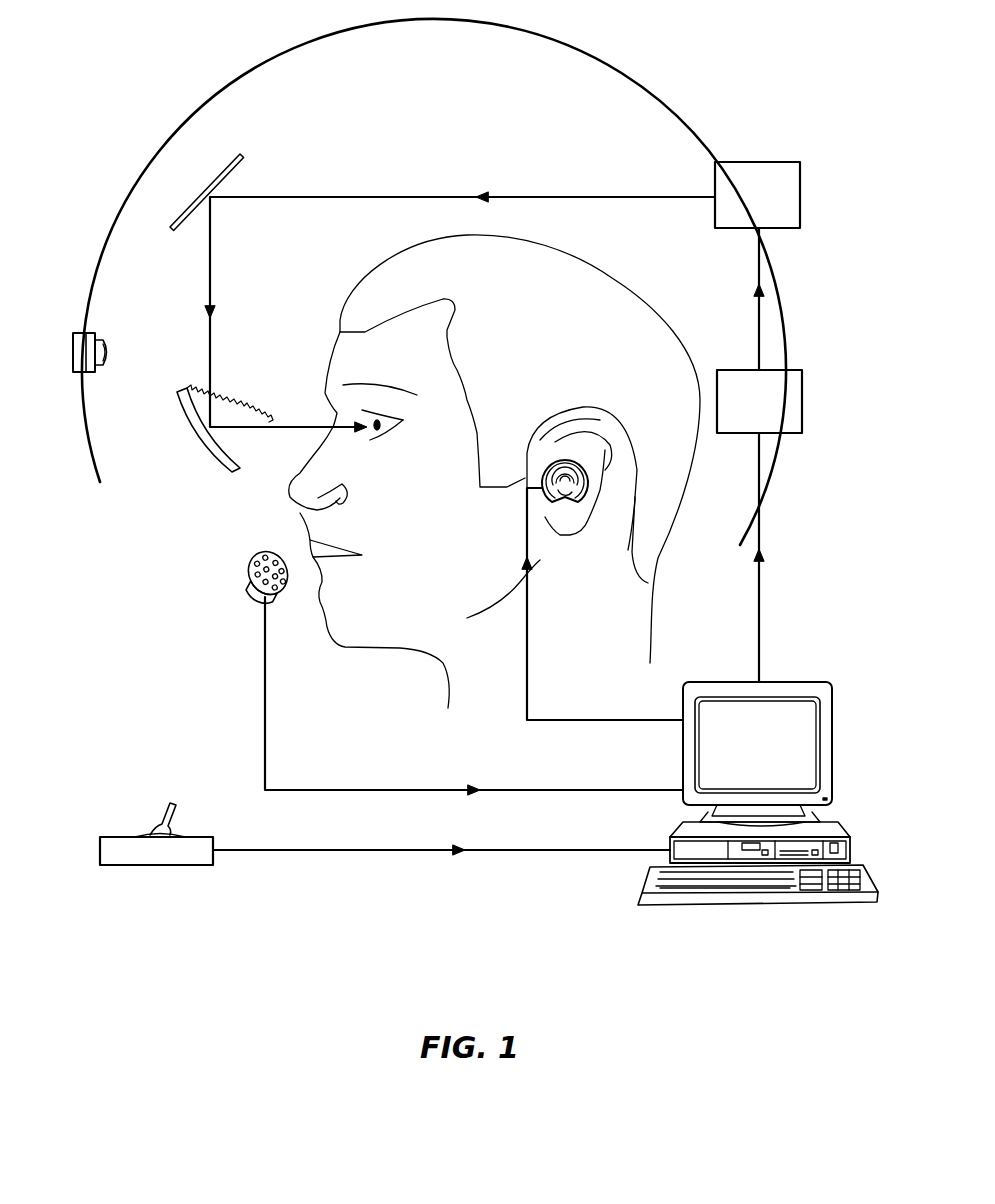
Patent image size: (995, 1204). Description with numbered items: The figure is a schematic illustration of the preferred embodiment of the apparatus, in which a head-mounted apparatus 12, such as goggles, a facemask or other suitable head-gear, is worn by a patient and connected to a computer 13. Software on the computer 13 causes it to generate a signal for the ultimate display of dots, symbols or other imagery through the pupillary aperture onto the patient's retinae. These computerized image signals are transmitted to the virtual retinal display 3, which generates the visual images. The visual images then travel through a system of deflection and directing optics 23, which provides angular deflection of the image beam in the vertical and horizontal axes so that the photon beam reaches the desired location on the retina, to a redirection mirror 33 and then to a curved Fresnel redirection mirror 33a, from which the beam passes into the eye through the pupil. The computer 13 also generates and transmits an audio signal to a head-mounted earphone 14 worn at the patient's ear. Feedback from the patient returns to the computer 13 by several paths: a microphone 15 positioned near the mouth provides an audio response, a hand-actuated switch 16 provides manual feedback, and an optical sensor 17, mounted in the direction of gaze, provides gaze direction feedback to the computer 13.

The head-mounted apparatus 12 is at (590, 55).
The redirection mirror 33 is at (242, 157).
The curved Fresnel redirection mirror 33a is at (192, 432).
The system of deflection and directing optics 23 is at (768, 162).
The optical sensor 17 is at (98, 330).
The virtual retinal display 3 is at (787, 370).
The head-mounted earphone 14 is at (580, 448).
The microphone 15 is at (248, 557).
The computer 13 is at (785, 682).
The hand-actuated switch 16 is at (122, 837).